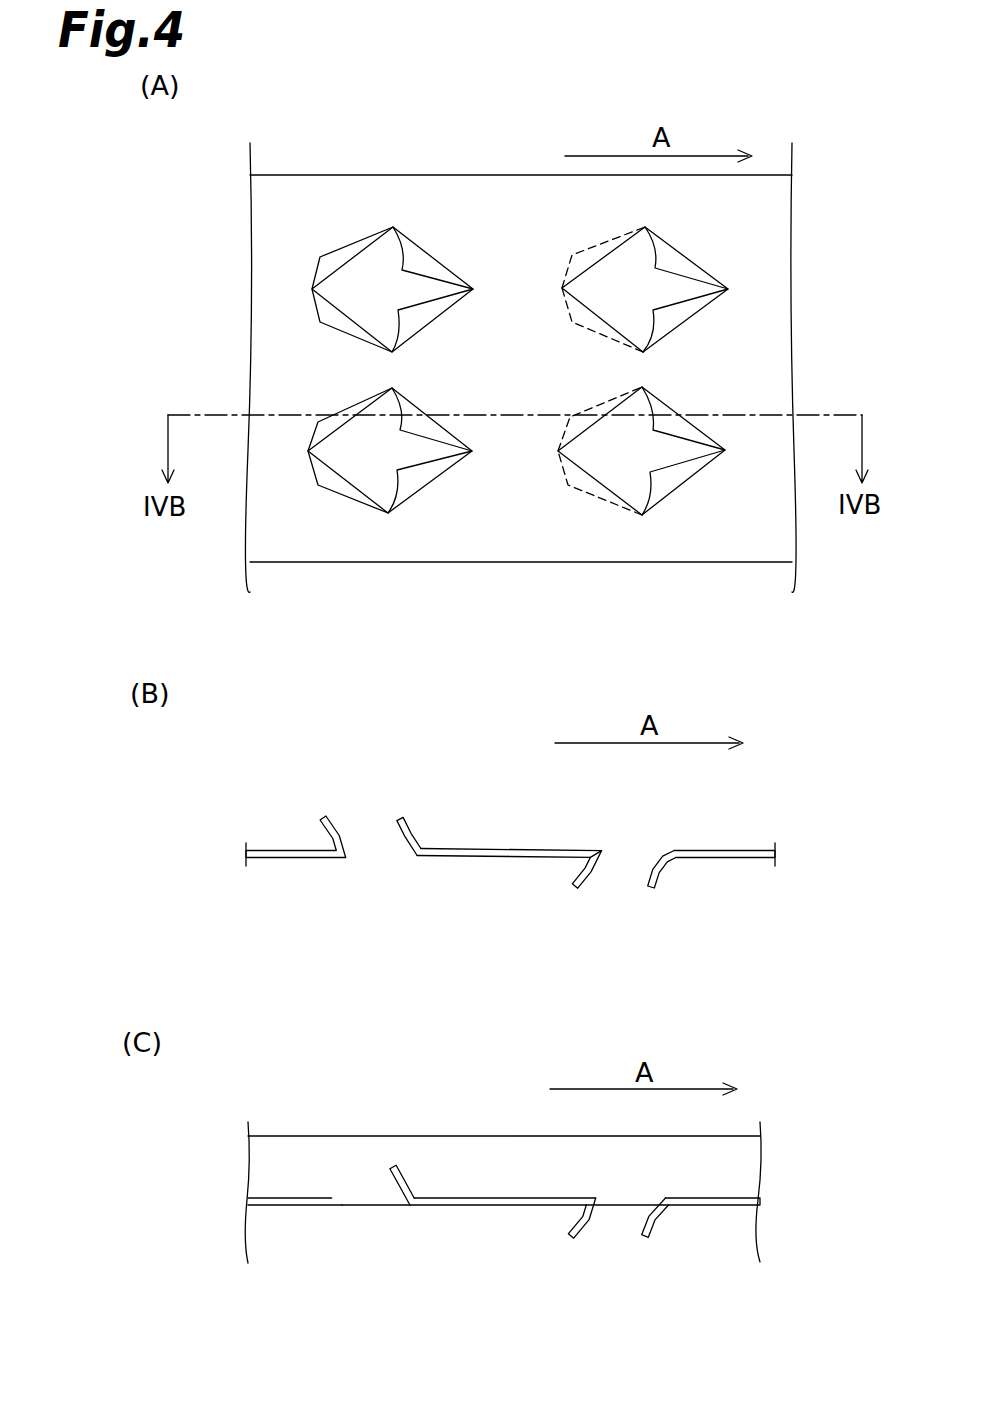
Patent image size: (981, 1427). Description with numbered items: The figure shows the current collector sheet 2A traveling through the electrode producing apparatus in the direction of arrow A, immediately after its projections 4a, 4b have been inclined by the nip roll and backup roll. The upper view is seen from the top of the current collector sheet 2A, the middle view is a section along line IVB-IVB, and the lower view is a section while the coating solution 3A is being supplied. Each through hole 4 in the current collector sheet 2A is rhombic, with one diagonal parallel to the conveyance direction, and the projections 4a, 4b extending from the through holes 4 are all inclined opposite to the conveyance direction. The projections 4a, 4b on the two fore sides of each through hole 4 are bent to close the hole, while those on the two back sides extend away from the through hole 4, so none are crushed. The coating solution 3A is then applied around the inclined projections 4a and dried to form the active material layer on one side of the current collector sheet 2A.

The current collector sheet 2A is at (765, 228).
The coating solution 3A is at (737, 1157).
The through hole 4 is at (375, 852).
The projection 4a is at (417, 423).
The projection 4b is at (667, 428).